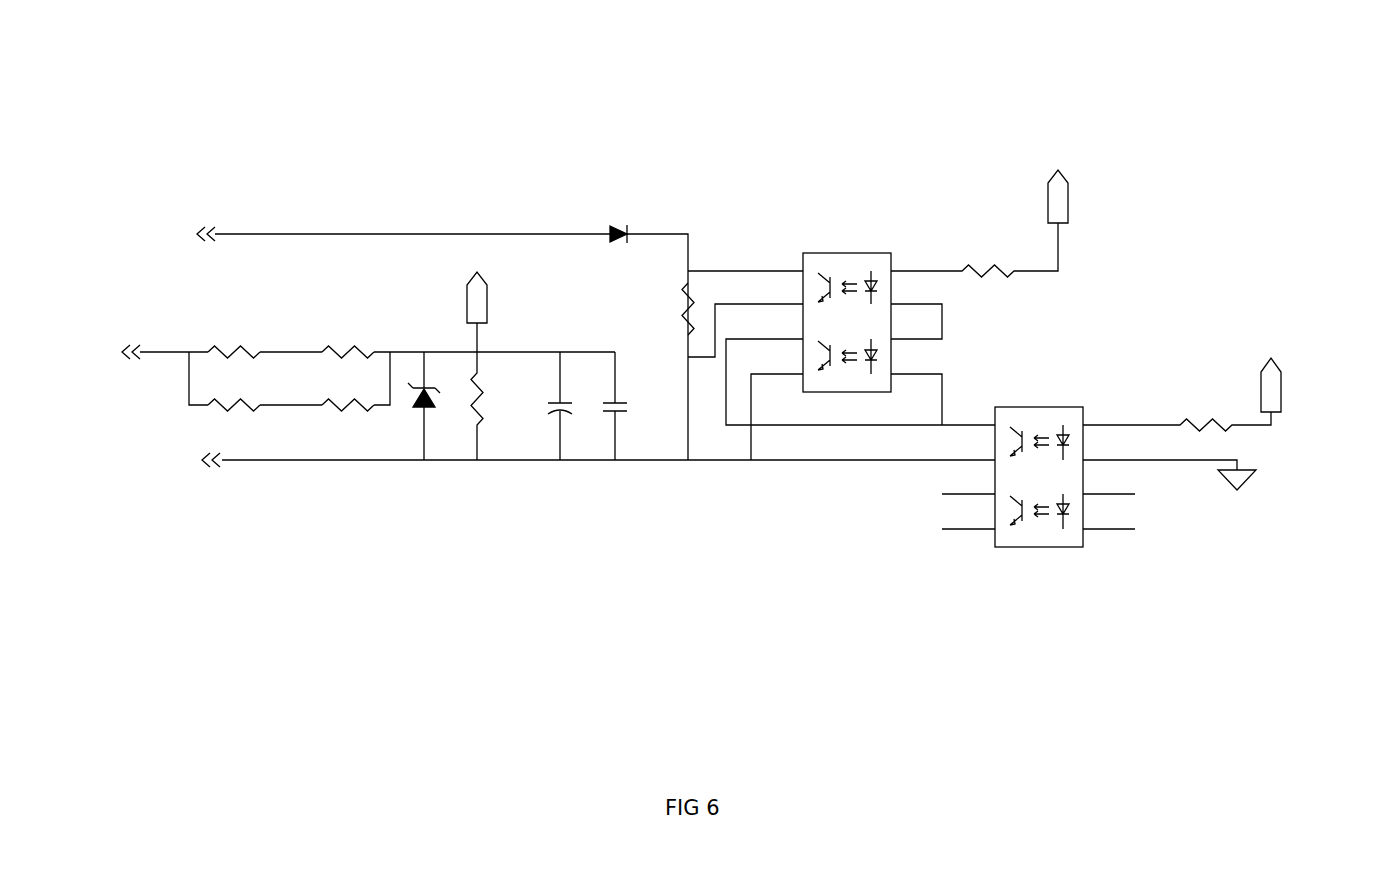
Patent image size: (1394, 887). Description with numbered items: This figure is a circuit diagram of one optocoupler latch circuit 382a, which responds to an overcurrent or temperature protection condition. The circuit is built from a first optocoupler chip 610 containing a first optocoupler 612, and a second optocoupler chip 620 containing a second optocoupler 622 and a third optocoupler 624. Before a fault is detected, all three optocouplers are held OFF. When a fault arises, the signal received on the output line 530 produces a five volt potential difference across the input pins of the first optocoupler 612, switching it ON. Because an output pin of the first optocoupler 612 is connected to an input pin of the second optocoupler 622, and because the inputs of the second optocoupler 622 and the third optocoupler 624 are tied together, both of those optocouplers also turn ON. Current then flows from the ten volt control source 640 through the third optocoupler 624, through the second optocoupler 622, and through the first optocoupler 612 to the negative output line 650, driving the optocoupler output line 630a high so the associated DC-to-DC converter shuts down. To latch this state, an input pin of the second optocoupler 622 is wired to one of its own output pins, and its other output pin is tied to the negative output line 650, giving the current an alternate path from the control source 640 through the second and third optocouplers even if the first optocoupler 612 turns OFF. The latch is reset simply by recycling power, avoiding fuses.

The optocoupler latch circuit 382a is at (937, 156).
The third optocoupler 624 is at (830, 270).
The second optocoupler 622 is at (843, 363).
The second optocoupler chip 620 is at (797, 392).
The first optocoupler chip 610 is at (985, 547).
The first optocoupler 612 is at (1033, 451).
The 10 volt control source 640 is at (1068, 180).
The optocoupler output line 630a is at (152, 220).
The negative output line 650 is at (150, 462).
The output line 530 is at (1270, 402).